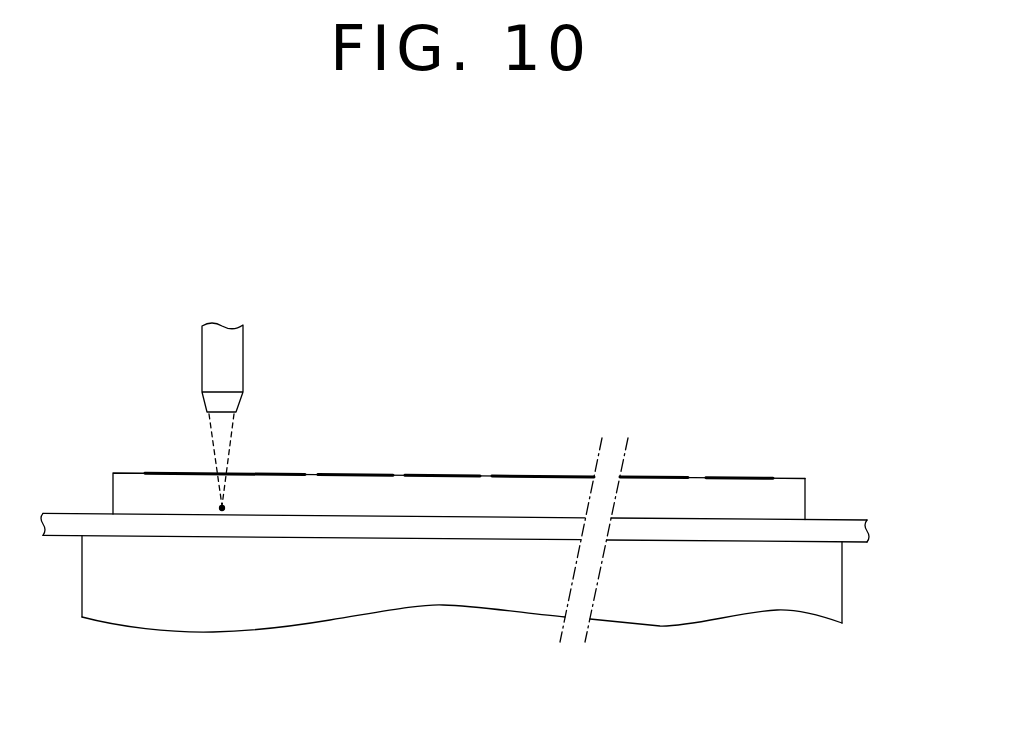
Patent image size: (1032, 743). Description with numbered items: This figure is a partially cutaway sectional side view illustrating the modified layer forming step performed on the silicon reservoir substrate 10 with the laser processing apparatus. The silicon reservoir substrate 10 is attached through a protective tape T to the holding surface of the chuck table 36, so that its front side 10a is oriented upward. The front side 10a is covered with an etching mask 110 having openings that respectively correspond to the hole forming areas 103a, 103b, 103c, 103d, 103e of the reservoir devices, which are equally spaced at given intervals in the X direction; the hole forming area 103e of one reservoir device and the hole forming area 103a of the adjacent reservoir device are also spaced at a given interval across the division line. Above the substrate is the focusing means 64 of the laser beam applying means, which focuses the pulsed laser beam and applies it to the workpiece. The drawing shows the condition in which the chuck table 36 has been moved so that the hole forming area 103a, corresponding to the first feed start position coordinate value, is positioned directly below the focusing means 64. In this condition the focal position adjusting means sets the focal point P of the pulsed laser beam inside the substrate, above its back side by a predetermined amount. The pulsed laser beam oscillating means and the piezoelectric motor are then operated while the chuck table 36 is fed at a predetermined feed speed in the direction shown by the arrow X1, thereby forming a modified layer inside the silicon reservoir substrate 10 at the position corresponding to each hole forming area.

The silicon reservoir substrate 10 is at (512, 451).
The front side 10a is at (796, 478).
The hole forming area 103a is at (215, 471).
The hole forming area 103b is at (308, 474).
The hole forming area 103c is at (393, 475).
The hole forming area 103d is at (482, 476).
The hole forming area 103e is at (573, 476).
The etching mask 110 is at (263, 473).
The focusing means 64 is at (235, 357).
The focal point P is at (219, 508).
The protective tape T is at (60, 525).
The chuck table 36 is at (830, 589).
The feed direction arrow X1 is at (663, 685).